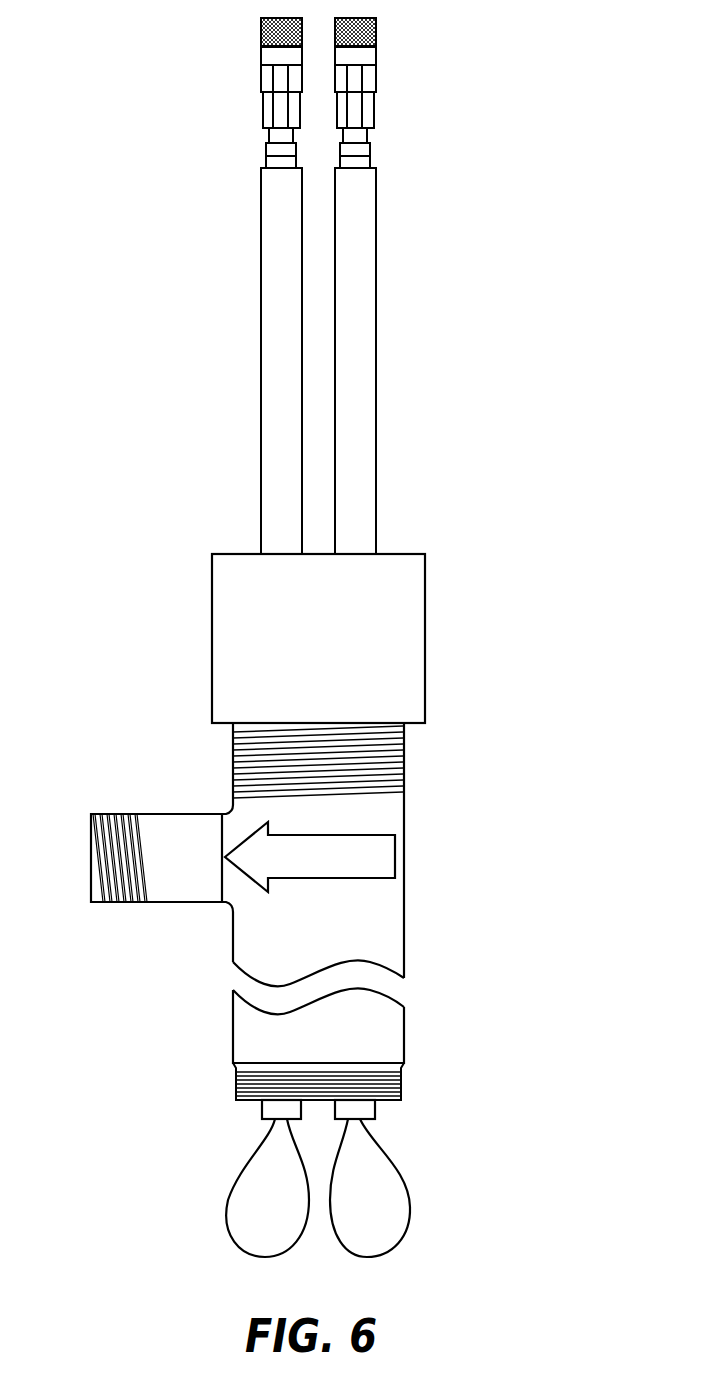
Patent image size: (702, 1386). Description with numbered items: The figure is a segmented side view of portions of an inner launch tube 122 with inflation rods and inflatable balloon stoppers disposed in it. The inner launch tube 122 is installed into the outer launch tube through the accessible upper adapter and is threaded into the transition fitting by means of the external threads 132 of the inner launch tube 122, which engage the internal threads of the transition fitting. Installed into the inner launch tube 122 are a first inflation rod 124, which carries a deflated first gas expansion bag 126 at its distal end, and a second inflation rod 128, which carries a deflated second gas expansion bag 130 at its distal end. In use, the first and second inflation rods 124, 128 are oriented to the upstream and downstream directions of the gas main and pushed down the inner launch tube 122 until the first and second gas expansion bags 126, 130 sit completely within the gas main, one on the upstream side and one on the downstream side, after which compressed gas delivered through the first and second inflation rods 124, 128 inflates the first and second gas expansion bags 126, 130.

The inner launch tube 122 is at (397, 815).
The first inflation rod 124 is at (266, 345).
The first gas expansion bag 126 is at (253, 1205).
The second inflation rod 128 is at (357, 350).
The second gas expansion bag 130 is at (383, 1202).
The external threads 132 is at (403, 1080).